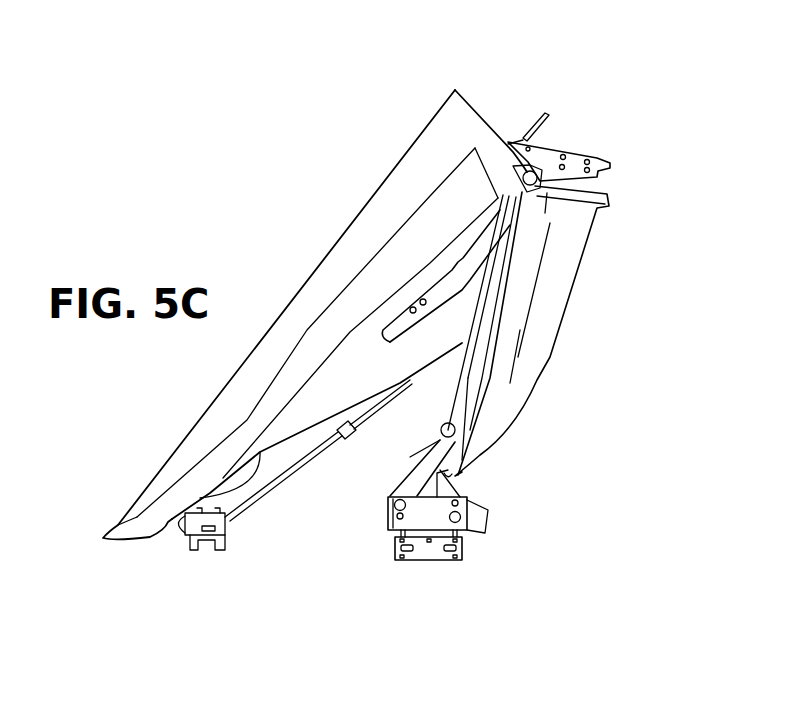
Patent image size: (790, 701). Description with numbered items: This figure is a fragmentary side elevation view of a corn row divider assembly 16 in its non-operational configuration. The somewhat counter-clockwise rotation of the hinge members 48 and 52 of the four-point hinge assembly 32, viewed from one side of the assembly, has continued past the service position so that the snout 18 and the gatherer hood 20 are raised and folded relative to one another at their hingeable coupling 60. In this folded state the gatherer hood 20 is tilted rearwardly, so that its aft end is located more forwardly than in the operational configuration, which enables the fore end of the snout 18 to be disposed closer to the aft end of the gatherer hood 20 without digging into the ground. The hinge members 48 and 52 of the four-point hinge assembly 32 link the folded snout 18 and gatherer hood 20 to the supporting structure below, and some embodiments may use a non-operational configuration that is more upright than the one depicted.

The corn row divider assembly 16 is at (312, 175).
The snout 18 is at (302, 284).
The gatherer hood 20 is at (570, 304).
The four-point hinge assembly 32 is at (358, 523).
The hinge member 48 is at (398, 470).
The hinge member 52 is at (445, 490).
The hingeable coupling 60 is at (526, 92).